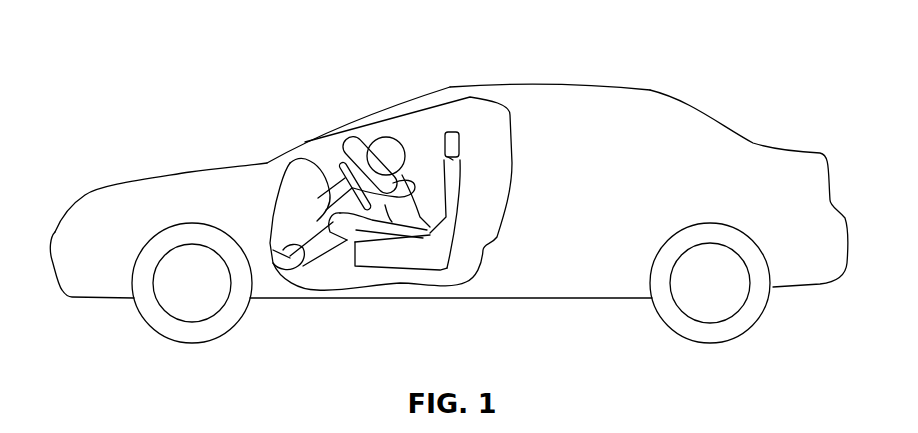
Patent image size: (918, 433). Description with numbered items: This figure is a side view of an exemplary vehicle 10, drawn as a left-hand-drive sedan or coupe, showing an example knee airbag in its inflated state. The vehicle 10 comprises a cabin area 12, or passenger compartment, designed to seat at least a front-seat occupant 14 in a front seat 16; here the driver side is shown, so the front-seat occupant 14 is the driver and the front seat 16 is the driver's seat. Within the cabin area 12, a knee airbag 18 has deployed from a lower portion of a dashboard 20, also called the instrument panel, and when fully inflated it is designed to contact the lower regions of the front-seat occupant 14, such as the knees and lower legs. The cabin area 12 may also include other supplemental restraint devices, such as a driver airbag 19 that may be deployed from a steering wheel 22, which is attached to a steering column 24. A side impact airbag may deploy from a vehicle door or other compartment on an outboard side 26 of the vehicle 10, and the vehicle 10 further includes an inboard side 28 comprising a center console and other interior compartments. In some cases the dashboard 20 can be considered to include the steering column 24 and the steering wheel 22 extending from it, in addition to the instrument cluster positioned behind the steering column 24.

The vehicle 10 is at (653, 90).
The cabin area 12 is at (488, 163).
The front-seat occupant 14 is at (388, 128).
The front seat 16 is at (433, 258).
The knee airbag 18 is at (305, 257).
The driver airbag 19 is at (365, 140).
The dashboard 20 is at (288, 187).
The steering wheel 22 is at (338, 153).
The steering column 24 is at (334, 157).
The outboard side 26 is at (484, 281).
The inboard side 28 is at (432, 170).